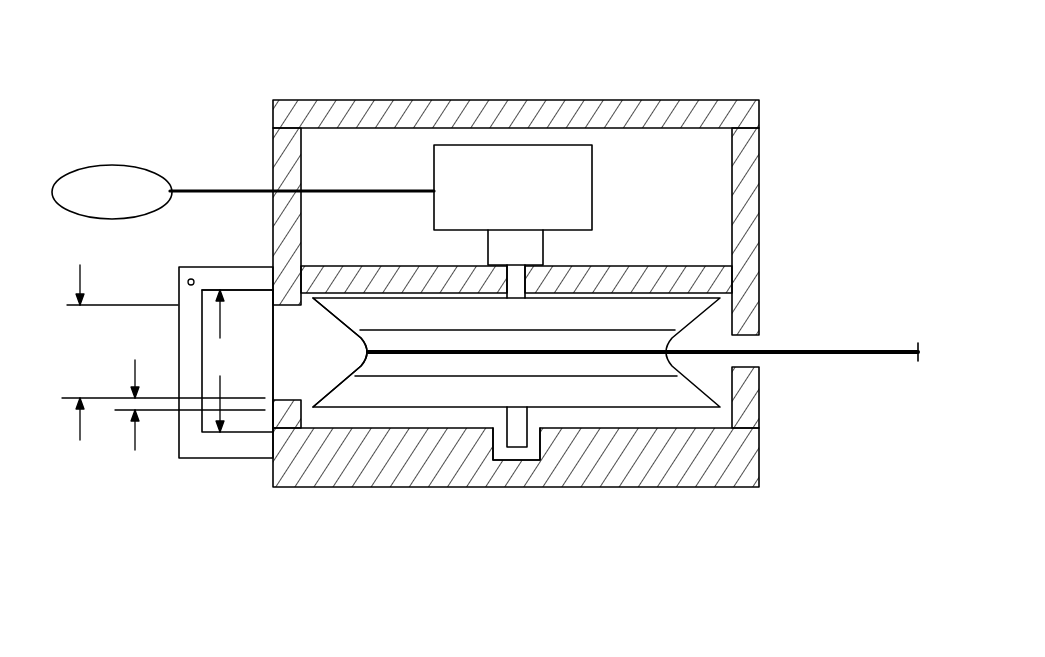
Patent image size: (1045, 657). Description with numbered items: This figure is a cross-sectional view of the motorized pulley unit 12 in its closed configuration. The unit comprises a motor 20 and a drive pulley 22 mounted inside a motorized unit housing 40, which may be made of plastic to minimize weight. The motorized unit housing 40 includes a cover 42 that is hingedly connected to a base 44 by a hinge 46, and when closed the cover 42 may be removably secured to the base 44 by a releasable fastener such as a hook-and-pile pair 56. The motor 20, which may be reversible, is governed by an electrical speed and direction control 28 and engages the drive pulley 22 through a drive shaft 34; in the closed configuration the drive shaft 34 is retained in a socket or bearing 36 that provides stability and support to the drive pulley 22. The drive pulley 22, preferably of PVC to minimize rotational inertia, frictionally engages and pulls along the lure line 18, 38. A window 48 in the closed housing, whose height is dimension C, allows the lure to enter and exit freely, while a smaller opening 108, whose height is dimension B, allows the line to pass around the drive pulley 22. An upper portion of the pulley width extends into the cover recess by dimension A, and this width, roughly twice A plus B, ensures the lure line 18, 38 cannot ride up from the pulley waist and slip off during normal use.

The motorized pulley unit 12 is at (848, 32).
The lure line 18 is at (830, 354).
The lure line 38 is at (643, 352).
The motor 20 is at (598, 178).
The drive pulley 22 is at (655, 410).
The electrical speed and direction control 28 is at (100, 162).
The drive shaft 34 is at (487, 487).
The bearing 36 is at (515, 463).
The motorized unit housing 40 is at (768, 72).
The cover 42 is at (762, 148).
The base 44 is at (345, 487).
The hinge 46 is at (238, 458).
The window 48 is at (238, 347).
The hook-and-pile pair 56 is at (545, 252).
The opening 108 is at (290, 356).